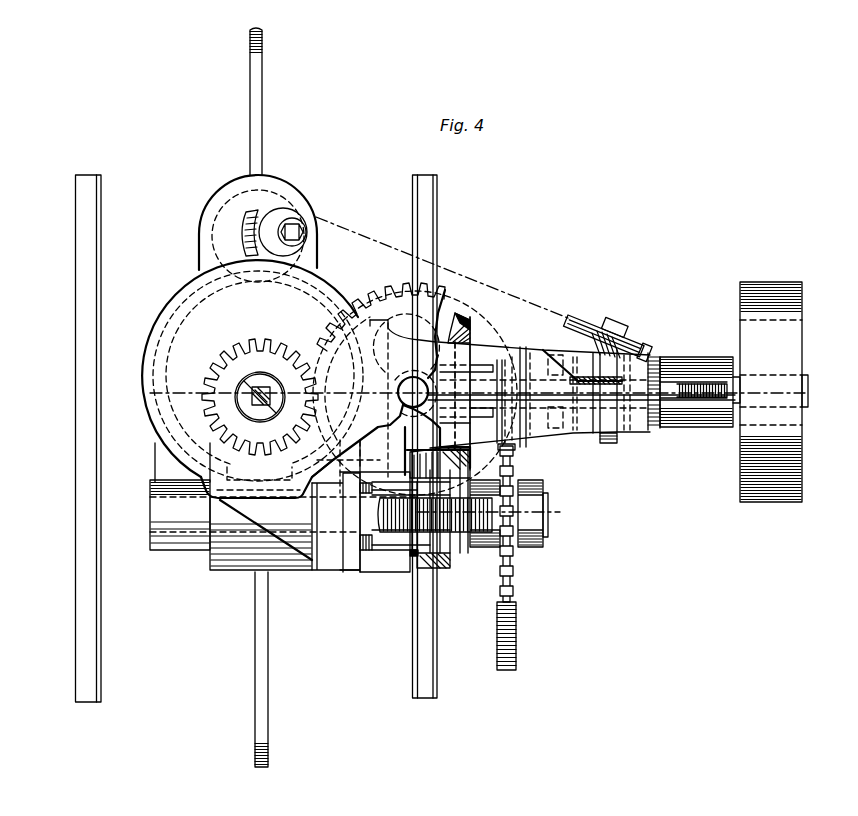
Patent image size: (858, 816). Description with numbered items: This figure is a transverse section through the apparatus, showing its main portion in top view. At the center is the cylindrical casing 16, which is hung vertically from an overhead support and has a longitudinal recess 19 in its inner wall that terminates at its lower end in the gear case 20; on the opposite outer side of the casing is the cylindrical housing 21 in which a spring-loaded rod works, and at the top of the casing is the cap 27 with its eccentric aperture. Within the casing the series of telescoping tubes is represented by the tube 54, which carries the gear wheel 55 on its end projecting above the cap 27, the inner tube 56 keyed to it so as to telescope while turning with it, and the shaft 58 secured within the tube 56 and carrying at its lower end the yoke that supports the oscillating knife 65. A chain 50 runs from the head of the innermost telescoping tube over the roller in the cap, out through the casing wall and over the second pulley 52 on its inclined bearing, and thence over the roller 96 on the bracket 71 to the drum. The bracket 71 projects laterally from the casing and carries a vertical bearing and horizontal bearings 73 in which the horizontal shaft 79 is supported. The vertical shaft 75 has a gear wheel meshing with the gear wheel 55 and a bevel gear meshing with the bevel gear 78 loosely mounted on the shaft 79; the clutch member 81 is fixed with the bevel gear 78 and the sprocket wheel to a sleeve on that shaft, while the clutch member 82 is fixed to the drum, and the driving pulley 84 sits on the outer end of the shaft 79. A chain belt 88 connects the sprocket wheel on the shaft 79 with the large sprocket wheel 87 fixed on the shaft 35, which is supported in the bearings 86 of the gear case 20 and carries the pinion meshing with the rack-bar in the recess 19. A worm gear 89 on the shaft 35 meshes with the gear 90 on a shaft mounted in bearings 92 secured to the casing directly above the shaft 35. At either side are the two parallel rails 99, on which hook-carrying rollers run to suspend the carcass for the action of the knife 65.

The cylindrical casing 16 is at (168, 334).
The longitudinal recess 19 is at (290, 478).
The gear case 20 is at (218, 573).
The cylindrical housing 21 is at (203, 216).
The cap 27 is at (163, 368).
The shaft 35 is at (549, 512).
The chain 50 is at (434, 288).
The second pulley 52 is at (301, 200).
The tube 54 is at (237, 398).
The gear wheel 55 is at (242, 347).
The tube 56 is at (250, 405).
The shaft 58 is at (256, 412).
The knife 65 is at (262, 95).
The bracket 71 is at (545, 347).
The horizontal bearings 73 is at (711, 428).
The shaft 75 is at (554, 365).
The bevel gear 78 is at (463, 325).
The horizontal shaft 79 is at (808, 395).
The clutch member 81 is at (526, 346).
The clutch member 82 is at (618, 443).
The driving pulley 84 is at (766, 283).
The bearings 86 is at (170, 549).
The large sprocket wheel 87 is at (517, 578).
The chain belt 88 is at (514, 474).
The worm gear 89 is at (444, 570).
The gear 90 is at (412, 560).
The bearings 92 is at (385, 549).
The roller 96 is at (629, 340).
The parallel rails 99 is at (75, 425).